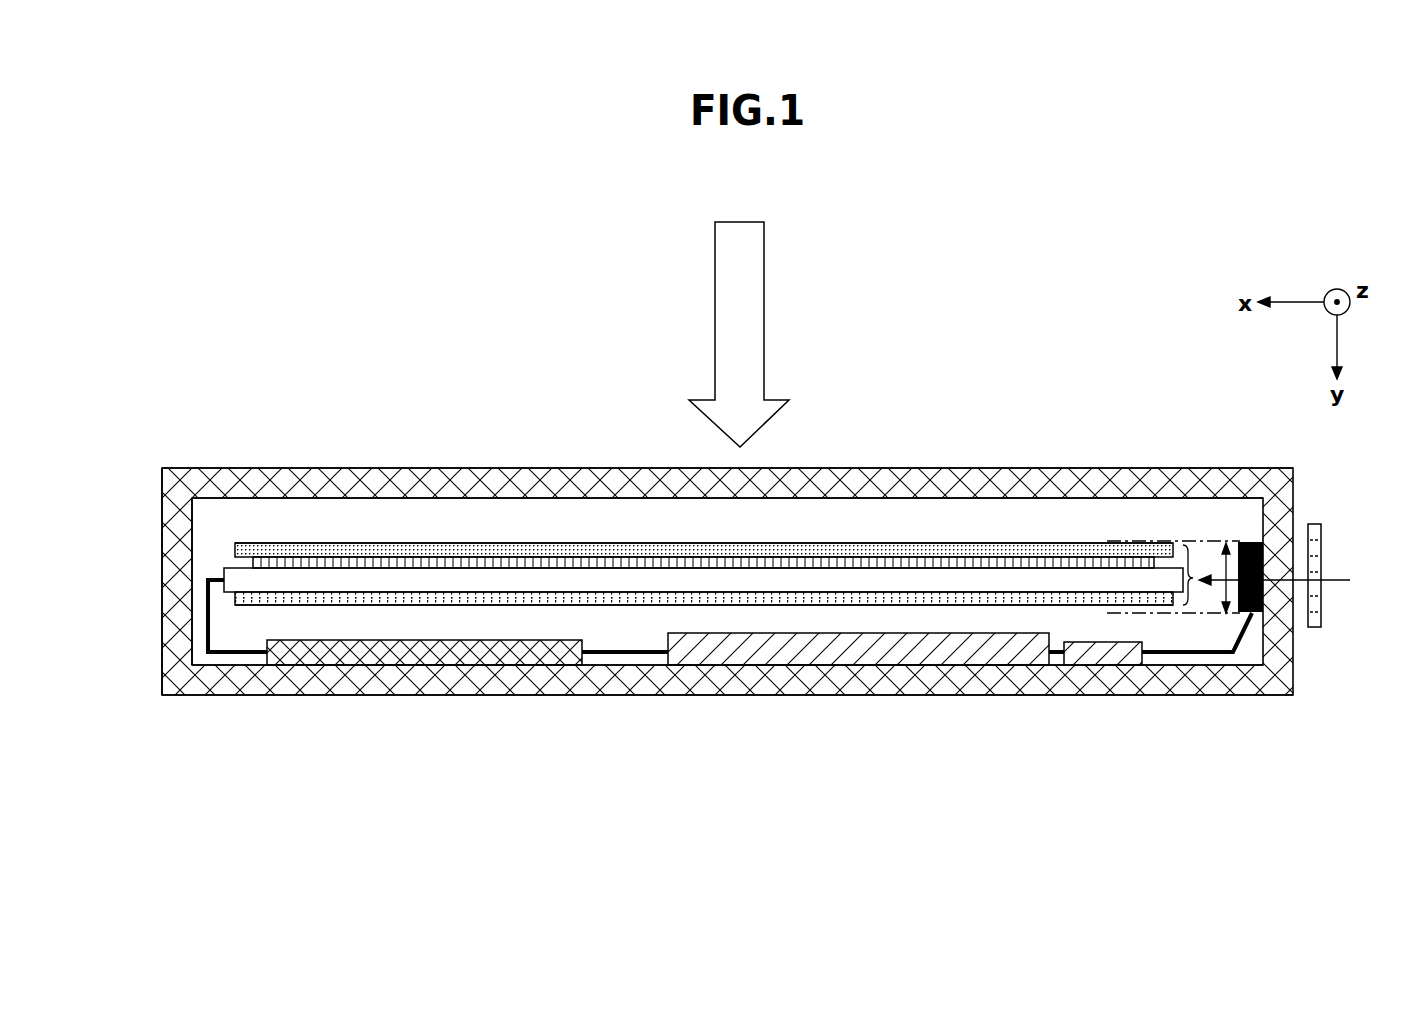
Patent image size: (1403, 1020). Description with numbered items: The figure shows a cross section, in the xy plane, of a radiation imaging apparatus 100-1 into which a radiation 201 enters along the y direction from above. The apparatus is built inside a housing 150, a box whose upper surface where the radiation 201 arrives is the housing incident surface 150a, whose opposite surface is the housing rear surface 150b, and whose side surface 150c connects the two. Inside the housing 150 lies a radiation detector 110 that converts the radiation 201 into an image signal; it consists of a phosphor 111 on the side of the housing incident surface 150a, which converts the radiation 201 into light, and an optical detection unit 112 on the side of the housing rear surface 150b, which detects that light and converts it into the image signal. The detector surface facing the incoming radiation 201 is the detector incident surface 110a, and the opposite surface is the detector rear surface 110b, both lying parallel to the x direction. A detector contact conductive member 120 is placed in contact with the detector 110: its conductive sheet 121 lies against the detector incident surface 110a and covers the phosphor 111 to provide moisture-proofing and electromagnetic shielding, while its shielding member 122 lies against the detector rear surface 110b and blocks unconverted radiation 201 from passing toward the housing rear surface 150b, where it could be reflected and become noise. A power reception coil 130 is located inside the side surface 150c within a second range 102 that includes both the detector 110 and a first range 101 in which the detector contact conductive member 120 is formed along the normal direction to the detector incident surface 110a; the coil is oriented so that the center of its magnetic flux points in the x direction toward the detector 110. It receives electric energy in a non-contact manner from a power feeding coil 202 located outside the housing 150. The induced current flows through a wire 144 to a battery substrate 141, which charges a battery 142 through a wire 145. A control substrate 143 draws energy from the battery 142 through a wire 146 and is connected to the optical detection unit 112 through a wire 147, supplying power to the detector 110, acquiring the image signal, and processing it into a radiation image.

The radiation imaging apparatus 100-1 is at (502, 200).
The radiation 201 is at (750, 315).
The power feeding coil 202 is at (1315, 524).
The radiation detector 110 is at (467, 413).
The phosphor 111 is at (437, 558).
The optical detection unit 112 is at (352, 578).
The detector incident surface 110a is at (612, 547).
The detector rear surface 110b is at (605, 603).
The detector contact conductive member 120 is at (958, 413).
The conductive sheet 121 is at (833, 548).
The shielding member 122 is at (927, 597).
The first range 101 is at (1212, 553).
The second range 102 is at (1203, 588).
The power reception coil 130 is at (1234, 547).
The battery substrate 141 is at (1105, 650).
The battery 142 is at (857, 650).
The control substrate 143 is at (415, 652).
The wire 144 is at (1160, 656).
The wire 145 is at (1058, 656).
The wire 146 is at (648, 658).
The wire 147 is at (250, 662).
The housing 150 is at (956, 684).
The housing incident surface 150a is at (519, 466).
The housing rear surface 150b is at (752, 695).
The side surface 150c is at (160, 645).